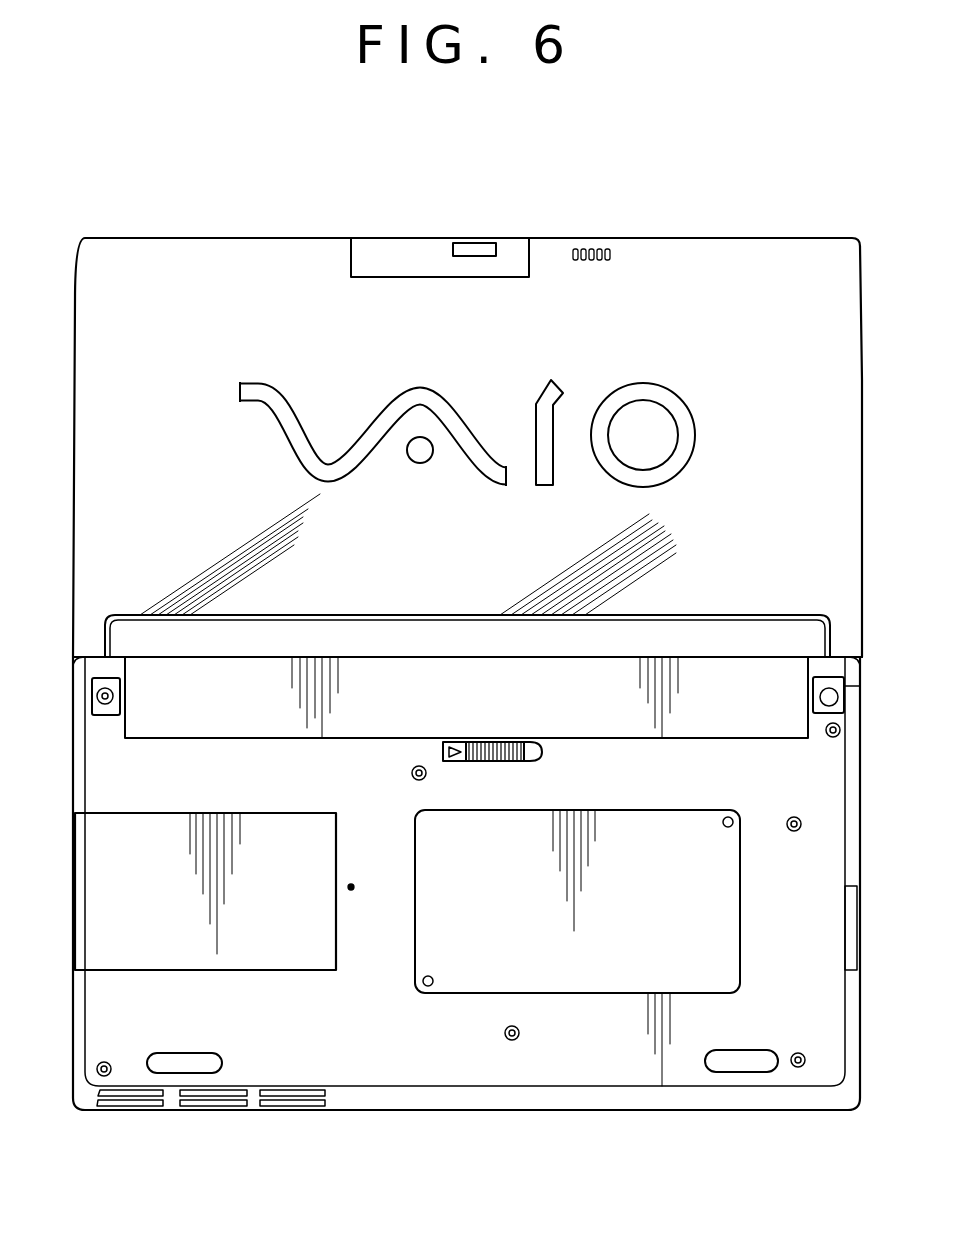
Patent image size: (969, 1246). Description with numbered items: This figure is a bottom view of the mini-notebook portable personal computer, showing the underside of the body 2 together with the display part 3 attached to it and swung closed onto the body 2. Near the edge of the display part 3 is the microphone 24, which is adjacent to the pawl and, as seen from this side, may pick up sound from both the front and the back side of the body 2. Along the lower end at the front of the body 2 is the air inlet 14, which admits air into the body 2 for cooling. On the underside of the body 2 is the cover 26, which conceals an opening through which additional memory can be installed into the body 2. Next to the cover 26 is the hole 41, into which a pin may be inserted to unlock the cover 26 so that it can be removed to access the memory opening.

The body 2 is at (637, 1110).
The display part 3 is at (760, 237).
The air inlet 14 is at (213, 1108).
The microphone 24 is at (585, 247).
The cover 26 is at (254, 972).
The hole 41 is at (351, 890).